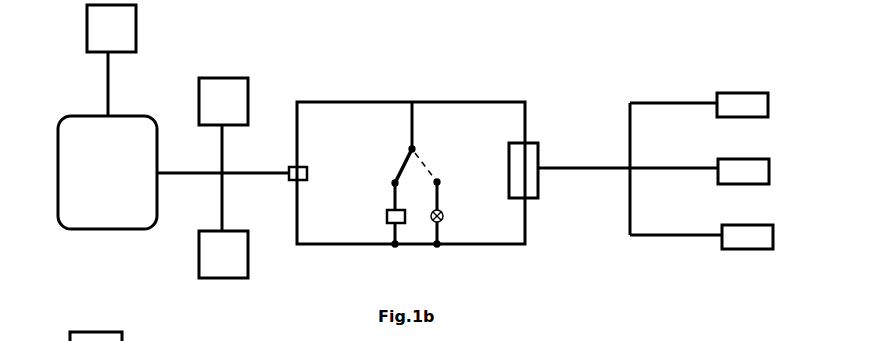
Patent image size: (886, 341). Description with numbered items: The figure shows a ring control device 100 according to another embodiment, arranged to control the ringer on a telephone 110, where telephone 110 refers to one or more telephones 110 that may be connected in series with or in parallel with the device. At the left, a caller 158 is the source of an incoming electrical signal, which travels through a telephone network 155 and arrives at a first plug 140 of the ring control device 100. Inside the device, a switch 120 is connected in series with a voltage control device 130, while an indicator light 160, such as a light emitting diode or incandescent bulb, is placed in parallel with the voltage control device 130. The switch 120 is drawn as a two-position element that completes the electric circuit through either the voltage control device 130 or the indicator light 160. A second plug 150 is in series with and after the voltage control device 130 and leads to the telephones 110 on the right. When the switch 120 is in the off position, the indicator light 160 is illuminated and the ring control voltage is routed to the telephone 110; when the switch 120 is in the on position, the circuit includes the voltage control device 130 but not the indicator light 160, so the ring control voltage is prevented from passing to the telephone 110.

The ring control device 100 is at (390, 100).
The telephone 110 is at (240, 79).
The switch 120 is at (402, 168).
The voltage control device 130 is at (387, 213).
The first plug 140 is at (311, 160).
The second plug 150 is at (537, 155).
The telephone network 155 is at (72, 133).
The caller 158 is at (97, 40).
The indicator light 160 is at (442, 218).